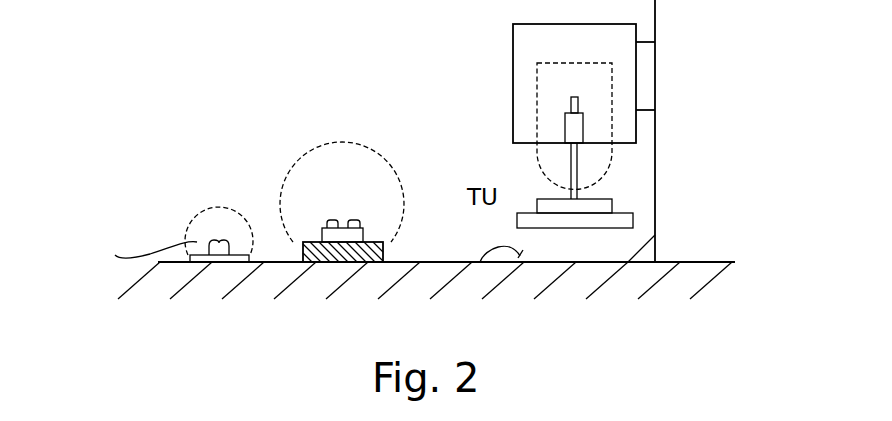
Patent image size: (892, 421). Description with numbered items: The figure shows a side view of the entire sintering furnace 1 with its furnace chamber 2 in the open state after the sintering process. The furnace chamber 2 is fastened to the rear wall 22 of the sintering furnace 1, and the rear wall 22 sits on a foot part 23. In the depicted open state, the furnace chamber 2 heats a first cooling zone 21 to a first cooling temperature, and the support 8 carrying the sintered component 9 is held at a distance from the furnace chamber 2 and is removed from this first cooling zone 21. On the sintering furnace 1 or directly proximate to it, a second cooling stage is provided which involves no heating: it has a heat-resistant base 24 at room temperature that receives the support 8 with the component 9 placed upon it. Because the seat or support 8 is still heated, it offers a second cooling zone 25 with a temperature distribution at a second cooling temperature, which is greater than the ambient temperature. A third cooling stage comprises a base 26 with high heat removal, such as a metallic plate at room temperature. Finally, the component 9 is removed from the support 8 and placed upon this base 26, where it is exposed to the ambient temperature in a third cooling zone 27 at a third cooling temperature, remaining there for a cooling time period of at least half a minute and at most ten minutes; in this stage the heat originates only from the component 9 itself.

The sintering furnace 1 is at (660, 140).
The furnace chamber 2 is at (553, 78).
The support 8 is at (323, 258).
The sintered component 9 is at (331, 238).
The first cooling zone 21 is at (607, 173).
The rear wall 22 is at (656, 77).
The foot part 23 is at (480, 262).
The heat-resistant base 24 is at (350, 260).
The second cooling zone 25 is at (287, 176).
The base 26 is at (225, 257).
The third cooling zone 27 is at (203, 222).